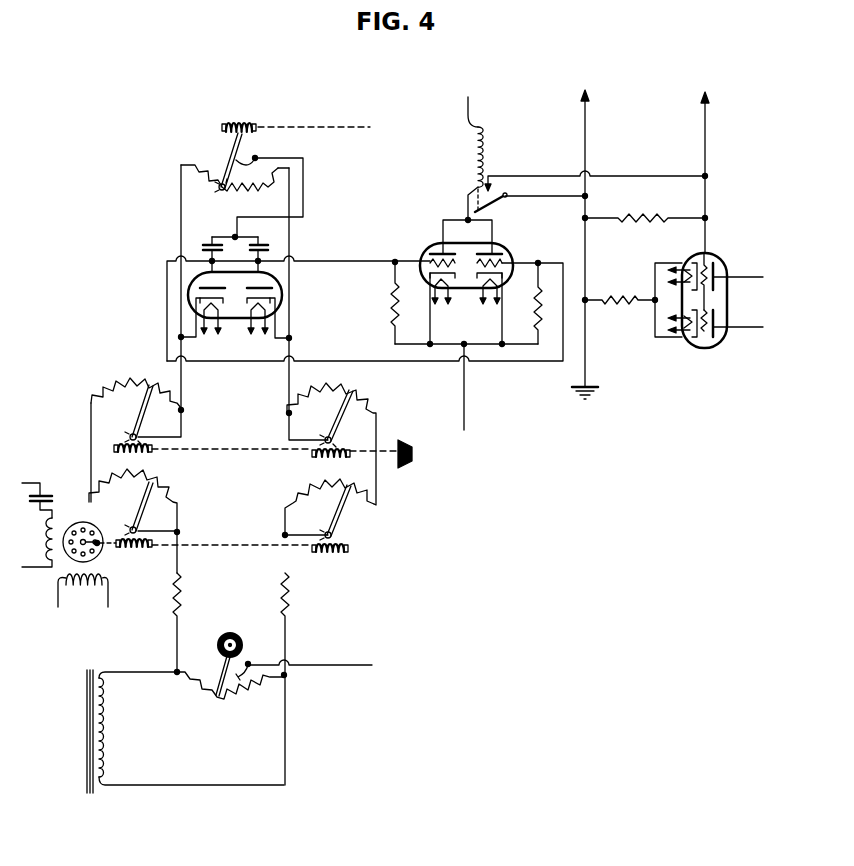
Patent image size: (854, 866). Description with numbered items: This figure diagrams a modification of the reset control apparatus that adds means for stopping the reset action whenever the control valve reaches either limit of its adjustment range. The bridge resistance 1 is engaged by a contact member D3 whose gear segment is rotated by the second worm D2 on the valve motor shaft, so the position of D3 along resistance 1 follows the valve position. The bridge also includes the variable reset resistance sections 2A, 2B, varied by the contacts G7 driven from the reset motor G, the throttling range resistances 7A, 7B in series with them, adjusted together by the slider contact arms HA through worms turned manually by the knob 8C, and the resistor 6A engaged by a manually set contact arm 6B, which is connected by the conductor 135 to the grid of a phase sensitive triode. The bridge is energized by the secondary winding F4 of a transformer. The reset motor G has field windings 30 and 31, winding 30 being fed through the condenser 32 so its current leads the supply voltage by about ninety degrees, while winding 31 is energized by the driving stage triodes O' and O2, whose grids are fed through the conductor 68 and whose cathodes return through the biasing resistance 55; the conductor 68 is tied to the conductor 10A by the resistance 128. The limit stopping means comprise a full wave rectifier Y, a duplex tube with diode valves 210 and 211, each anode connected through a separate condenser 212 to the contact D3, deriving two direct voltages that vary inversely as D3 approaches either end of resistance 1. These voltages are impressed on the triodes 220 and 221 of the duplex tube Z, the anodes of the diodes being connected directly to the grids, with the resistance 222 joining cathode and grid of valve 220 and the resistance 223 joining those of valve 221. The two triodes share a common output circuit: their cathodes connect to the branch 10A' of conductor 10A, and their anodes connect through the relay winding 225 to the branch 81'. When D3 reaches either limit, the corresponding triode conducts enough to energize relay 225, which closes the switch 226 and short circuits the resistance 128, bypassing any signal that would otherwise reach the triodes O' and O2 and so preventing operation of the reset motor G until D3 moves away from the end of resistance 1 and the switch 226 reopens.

The second worm D2 is at (239, 122).
The contact member D3 is at (230, 166).
The bridge resistance 1 is at (217, 189).
The diode valve 210 is at (201, 274).
The diode valve 211 is at (268, 276).
The condenser 212 is at (235, 253).
The full wave rectifier Y is at (237, 320).
The resistance 223 is at (388, 303).
The triode valve 220 is at (512, 252).
The triode valve 221 is at (423, 249).
The resistance 222 is at (524, 303).
The duplex tube Z is at (473, 294).
The branch conductor 10A' is at (486, 386).
The branch conductor 81' is at (487, 111).
The relay winding 225 is at (485, 144).
The relay switch 226 is at (495, 205).
The conductor 10A is at (605, 238).
The conductor 68 is at (707, 142).
The resistance 128 is at (637, 214).
The biasing resistance 55 is at (613, 297).
The triode O' is at (709, 290).
The triode O2 is at (708, 343).
The reset motor G is at (585, 400).
The variable throttling range adjustment resistance 7A is at (118, 381).
The variable throttling range adjustment resistance 7B is at (357, 393).
The slider contact arm HA is at (142, 423).
The knob 8C is at (413, 457).
The variable reset resistance section 2A is at (158, 483).
The variable reset resistance section 2B is at (295, 491).
The contact G7 is at (133, 510).
The condenser 32 is at (52, 496).
The field winding 30 is at (42, 533).
The field winding 31 is at (92, 583).
The resistor 6A is at (223, 700).
The contact arm 6B is at (217, 677).
The conductor 135 is at (327, 665).
The secondary winding F4 is at (105, 737).